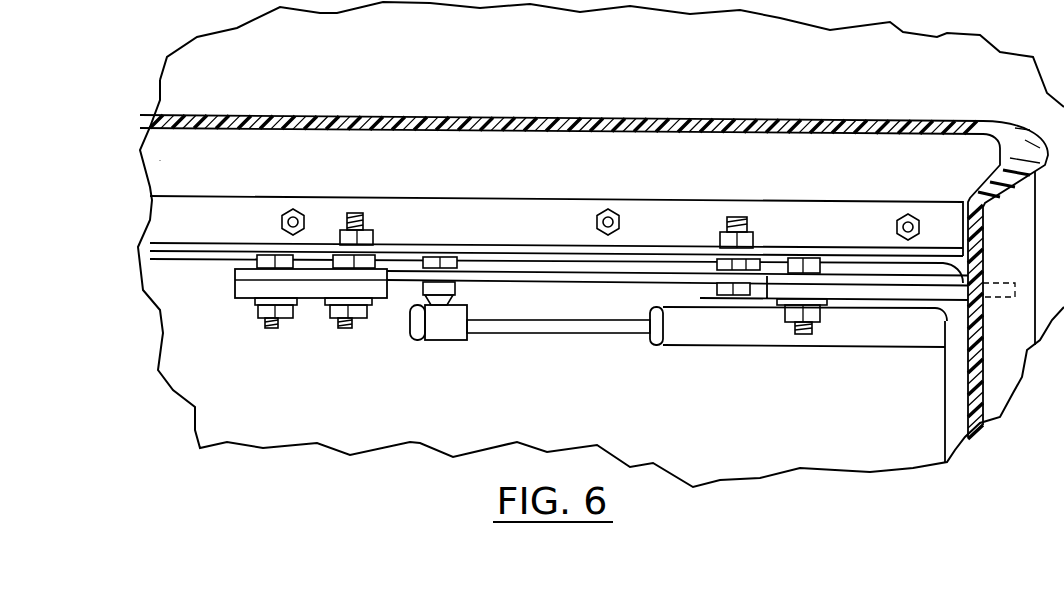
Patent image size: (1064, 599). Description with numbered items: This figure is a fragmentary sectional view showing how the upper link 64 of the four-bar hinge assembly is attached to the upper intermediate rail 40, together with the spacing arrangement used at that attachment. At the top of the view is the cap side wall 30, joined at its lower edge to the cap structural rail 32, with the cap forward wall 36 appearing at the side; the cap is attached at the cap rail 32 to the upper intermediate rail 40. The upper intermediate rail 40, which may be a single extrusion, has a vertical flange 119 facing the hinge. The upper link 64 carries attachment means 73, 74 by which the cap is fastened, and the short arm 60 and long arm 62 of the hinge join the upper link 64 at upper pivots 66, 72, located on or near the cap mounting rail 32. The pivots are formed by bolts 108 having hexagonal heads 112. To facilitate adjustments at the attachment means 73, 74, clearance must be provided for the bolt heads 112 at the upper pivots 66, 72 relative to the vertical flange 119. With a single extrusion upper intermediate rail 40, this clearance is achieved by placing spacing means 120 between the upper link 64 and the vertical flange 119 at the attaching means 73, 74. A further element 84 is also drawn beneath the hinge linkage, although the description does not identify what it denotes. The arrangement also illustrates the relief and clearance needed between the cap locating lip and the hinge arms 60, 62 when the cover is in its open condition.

The side wall of the cap 30 is at (667, 127).
The cap structural rail 32 is at (303, 153).
The forward wall 36 is at (972, 218).
The upper intermediate rail 40 is at (188, 220).
The vertical flange of the upper intermediate rail 119 is at (550, 243).
The spacing means 120 is at (420, 250).
The hexagonal head 112 is at (260, 262).
The attachment means 73 is at (373, 242).
The attachment means 74 is at (745, 242).
The upper link 64 is at (583, 275).
The long arm 62 is at (383, 292).
The pivot 72 is at (287, 308).
The bolt 108 is at (270, 326).
The gas cylinder 84 is at (713, 327).
The short arm 60 is at (910, 288).
The pivot 66 is at (797, 314).